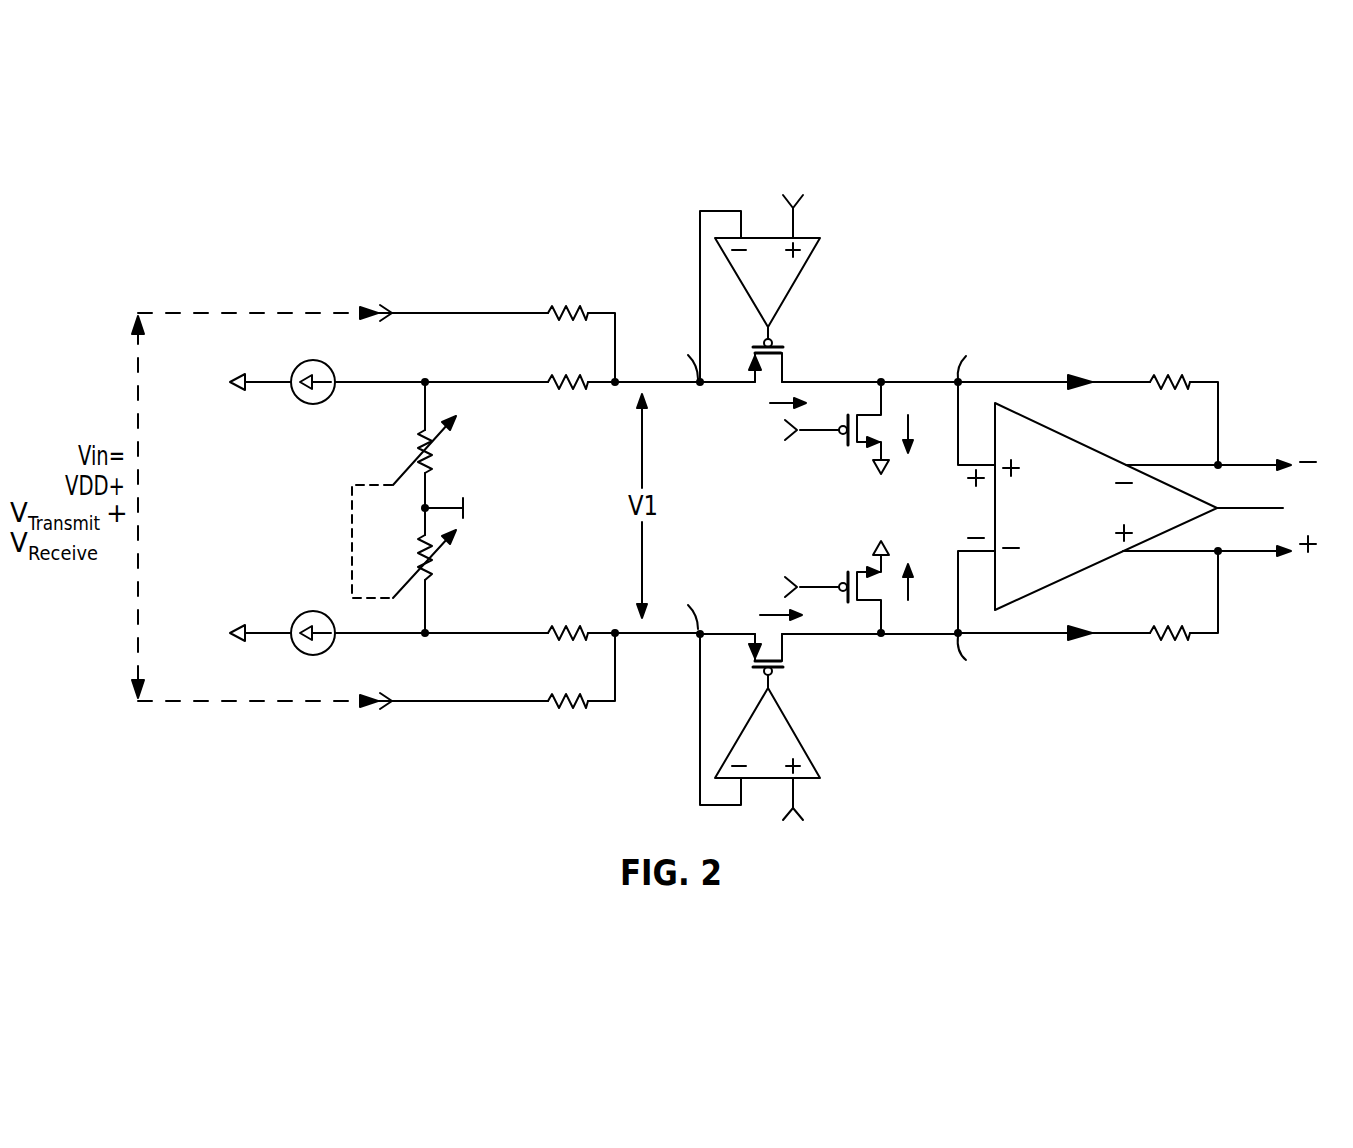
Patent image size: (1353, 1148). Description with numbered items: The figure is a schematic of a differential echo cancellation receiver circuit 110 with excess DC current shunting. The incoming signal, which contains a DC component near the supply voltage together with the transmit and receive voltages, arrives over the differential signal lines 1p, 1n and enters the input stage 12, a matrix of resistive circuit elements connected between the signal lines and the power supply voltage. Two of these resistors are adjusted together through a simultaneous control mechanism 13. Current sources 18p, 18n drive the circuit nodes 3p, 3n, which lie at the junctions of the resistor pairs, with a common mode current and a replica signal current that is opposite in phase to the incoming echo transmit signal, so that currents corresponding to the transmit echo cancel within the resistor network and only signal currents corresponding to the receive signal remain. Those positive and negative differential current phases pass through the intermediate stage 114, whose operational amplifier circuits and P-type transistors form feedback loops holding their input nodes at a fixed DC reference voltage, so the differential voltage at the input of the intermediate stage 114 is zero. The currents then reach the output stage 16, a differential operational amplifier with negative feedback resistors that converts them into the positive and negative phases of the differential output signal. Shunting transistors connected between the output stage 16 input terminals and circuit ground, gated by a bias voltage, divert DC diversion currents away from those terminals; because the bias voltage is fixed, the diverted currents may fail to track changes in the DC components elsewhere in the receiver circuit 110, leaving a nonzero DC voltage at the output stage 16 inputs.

The differential echo cancellation receiver circuit 110 is at (1008, 258).
The differential signal line 1p is at (184, 312).
The differential signal line 1n is at (185, 703).
The circuit node 3p is at (426, 380).
The circuit node 3n is at (427, 632).
The input stage 12 is at (570, 484).
The simultaneous control mechanism 13 is at (346, 512).
The current source 18p is at (298, 366).
The current source 18n is at (298, 656).
The intermediate stage 114 is at (746, 502).
The output stage 16 is at (1150, 454).